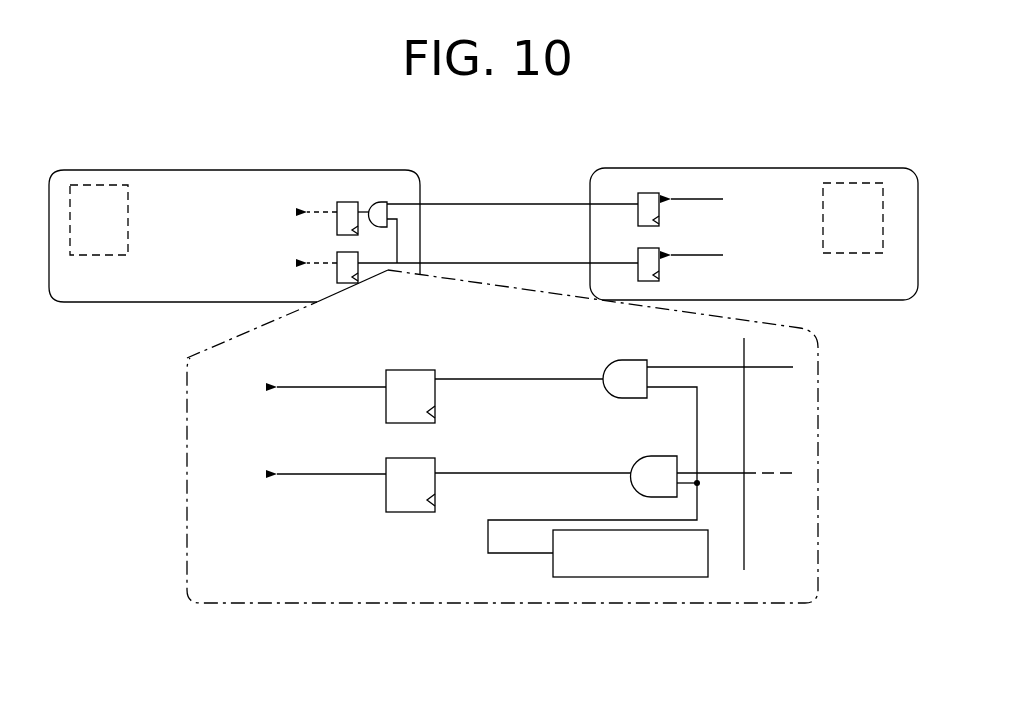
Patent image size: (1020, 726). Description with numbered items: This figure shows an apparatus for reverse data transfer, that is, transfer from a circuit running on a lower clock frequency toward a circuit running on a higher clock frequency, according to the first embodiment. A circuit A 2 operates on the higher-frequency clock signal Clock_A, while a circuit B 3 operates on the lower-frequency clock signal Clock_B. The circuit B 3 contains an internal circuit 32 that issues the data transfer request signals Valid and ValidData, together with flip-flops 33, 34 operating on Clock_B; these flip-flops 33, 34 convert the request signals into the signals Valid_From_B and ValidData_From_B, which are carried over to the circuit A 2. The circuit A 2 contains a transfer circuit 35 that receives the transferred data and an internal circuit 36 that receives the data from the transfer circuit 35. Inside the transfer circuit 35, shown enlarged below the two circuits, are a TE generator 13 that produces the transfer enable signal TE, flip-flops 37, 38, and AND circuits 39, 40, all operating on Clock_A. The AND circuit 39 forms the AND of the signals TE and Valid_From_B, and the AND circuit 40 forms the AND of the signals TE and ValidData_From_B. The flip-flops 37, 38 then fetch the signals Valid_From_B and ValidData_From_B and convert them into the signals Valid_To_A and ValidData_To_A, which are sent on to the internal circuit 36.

The circuit A 2 is at (343, 170).
The circuit B 3 is at (885, 168).
The TE generator 13 is at (603, 577).
The internal circuit 32 is at (848, 183).
The flip-flop 33 is at (646, 193).
The flip-flop 34 is at (662, 273).
The transfer circuit 35 is at (747, 603).
The internal circuit 36 is at (91, 185).
The flip-flop 37 is at (410, 370).
The flip-flop 38 is at (405, 512).
The AND circuit 39 is at (630, 360).
The AND circuit 40 is at (656, 456).